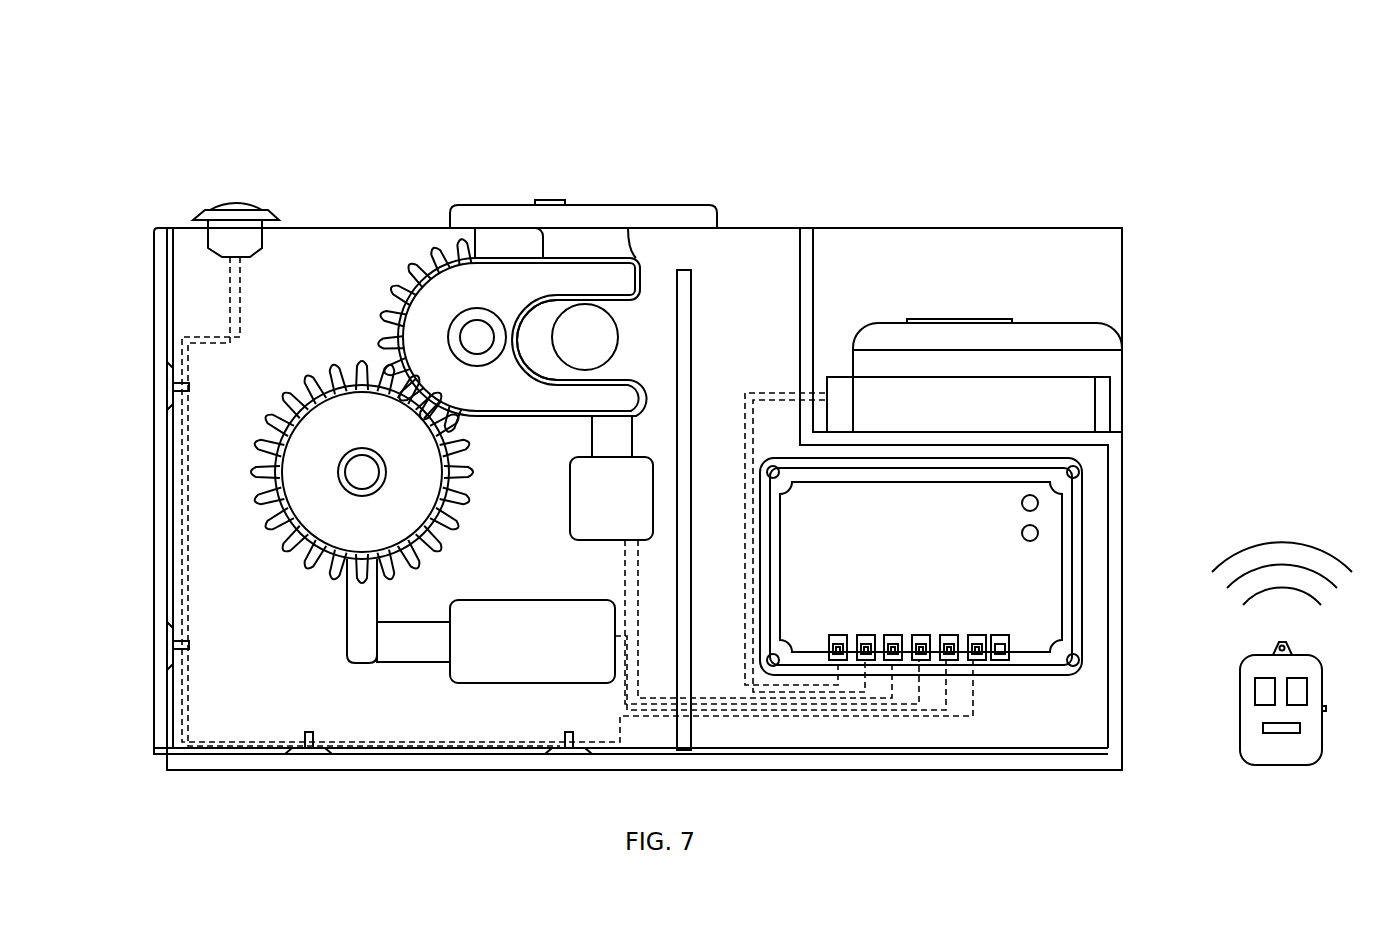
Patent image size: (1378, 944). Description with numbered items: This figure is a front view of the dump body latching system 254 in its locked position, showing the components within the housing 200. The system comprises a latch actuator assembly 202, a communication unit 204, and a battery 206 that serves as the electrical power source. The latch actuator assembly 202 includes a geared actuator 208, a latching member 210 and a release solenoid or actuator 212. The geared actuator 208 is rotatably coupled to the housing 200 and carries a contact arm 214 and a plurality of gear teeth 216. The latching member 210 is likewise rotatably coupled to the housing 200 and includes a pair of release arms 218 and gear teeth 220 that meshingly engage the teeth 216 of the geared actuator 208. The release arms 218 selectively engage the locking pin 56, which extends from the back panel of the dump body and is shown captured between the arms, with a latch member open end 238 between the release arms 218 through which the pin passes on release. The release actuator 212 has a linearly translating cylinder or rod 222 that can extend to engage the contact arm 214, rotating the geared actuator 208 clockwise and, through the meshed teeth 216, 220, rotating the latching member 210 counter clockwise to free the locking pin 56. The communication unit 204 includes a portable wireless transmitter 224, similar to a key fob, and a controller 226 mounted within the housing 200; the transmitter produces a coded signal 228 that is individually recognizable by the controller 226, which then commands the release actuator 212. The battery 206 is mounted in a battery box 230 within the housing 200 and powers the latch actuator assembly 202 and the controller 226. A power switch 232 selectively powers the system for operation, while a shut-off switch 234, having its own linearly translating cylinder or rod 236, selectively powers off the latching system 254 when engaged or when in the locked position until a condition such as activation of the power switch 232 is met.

The locking pin 56 is at (588, 328).
The housing 200 is at (154, 265).
The latch actuator assembly 202 is at (250, 703).
The communication unit 204 is at (1101, 476).
The battery 206 is at (1100, 308).
The geared actuator 208 is at (351, 442).
The latching member 210 is at (424, 311).
The release actuator 212 is at (522, 688).
The contact arm 214 is at (347, 635).
The gear teeth 216 is at (280, 390).
The release arms 218 is at (563, 258).
The gear teeth 220 is at (358, 325).
The linearly translating cylinder 222 is at (400, 650).
The wireless transmitter 224 is at (1225, 728).
The controller 226 is at (1083, 523).
The coded signal 228 is at (1316, 538).
The battery box 230 is at (1120, 432).
The power switch 232 is at (236, 200).
The shut-off switch 234 is at (655, 457).
The linearly translating cylinder 236 is at (620, 437).
The latch member open end 238 is at (632, 348).
The dump body latching system 254 is at (1008, 135).